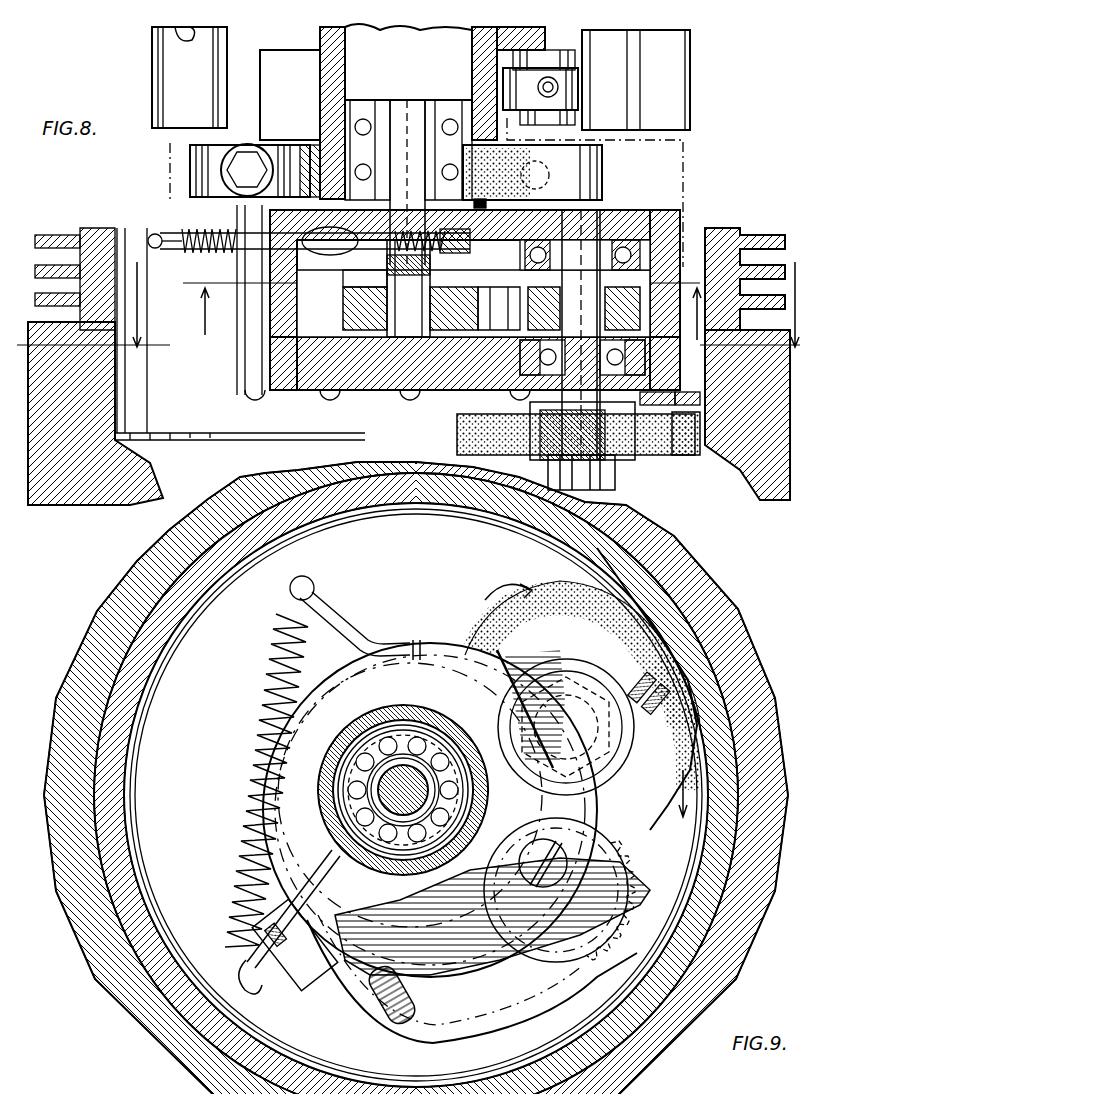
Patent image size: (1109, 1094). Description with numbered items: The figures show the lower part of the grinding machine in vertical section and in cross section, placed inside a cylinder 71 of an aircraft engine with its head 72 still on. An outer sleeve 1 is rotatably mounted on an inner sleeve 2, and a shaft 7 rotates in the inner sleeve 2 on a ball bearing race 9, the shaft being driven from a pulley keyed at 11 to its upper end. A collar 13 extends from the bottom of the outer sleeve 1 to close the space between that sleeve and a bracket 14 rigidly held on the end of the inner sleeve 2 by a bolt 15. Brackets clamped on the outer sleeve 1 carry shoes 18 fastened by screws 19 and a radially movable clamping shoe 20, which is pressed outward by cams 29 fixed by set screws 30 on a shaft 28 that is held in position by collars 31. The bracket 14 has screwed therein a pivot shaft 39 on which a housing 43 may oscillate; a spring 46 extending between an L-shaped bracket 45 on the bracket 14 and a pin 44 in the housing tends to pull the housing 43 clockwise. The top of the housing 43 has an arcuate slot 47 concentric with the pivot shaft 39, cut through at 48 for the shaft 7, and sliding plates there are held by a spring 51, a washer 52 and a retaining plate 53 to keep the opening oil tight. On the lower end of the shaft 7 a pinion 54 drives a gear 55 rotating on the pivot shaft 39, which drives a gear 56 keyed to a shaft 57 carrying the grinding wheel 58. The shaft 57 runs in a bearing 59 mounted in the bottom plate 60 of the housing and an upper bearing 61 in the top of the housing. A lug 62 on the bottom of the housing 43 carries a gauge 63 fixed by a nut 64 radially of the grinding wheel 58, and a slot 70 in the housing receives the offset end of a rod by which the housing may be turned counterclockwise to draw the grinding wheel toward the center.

In FIG. 8, the outer sleeve 1 is at (318, 75).
In FIG. 9, the outer sleeve 1 is at (372, 735).
In FIG. 8, the inner sleeve 2 is at (390, 66).
In FIG. 9, the inner sleeve 2 is at (420, 745).
In FIG. 8, the shaft 7 is at (392, 80).
In FIG. 9, the shaft 7 is at (410, 805).
In FIG. 8, the ball bearing race 9 is at (407, 150).
In FIG. 9, the ball bearing race 9 is at (385, 845).
In FIG. 8, the key 11 is at (408, 314).
In FIG. 8, the collar 13 is at (318, 140).
In FIG. 8, the bracket 14 is at (292, 150).
In FIG. 9, the bracket 14 is at (508, 940).
In FIG. 8, the bolt 15 is at (246, 158).
In FIG. 8, the shoe 18 is at (170, 68).
In FIG. 8, the screw 19 is at (178, 33).
In FIG. 8, the clamping shoe 20 is at (665, 95).
In FIG. 8, the shaft 28 is at (575, 120).
In FIG. 8, the cam 29 is at (578, 94).
In FIG. 8, the set screw 30 is at (558, 84).
In FIG. 8, the collar 31 is at (548, 58).
In FIG. 8, the pivot shaft 39 is at (547, 173).
In FIG. 9, the pivot shaft 39 is at (556, 848).
In FIG. 8, the housing 43 is at (672, 220).
In FIG. 9, the housing 43 is at (355, 1012).
In FIG. 8, the pin 44 is at (150, 234).
In FIG. 9, the pin 44 is at (268, 972).
In FIG. 8, the L-shaped bracket 45 is at (410, 228).
In FIG. 9, the L-shaped bracket 45 is at (355, 622).
In FIG. 8, the spring 46 is at (190, 236).
In FIG. 9, the spring 46 is at (276, 616).
In FIG. 8, the arcuate slot 47 is at (480, 305).
In FIG. 8, the opening 48 is at (473, 205).
In FIG. 8, the spring 51 is at (408, 288).
In FIG. 8, the washer 52 is at (408, 280).
In FIG. 8, the retaining plate 53 is at (350, 279).
In FIG. 8, the pinion 54 is at (343, 312).
In FIG. 9, the pinion 54 is at (345, 718).
In FIG. 9, the gear 55 is at (600, 890).
In FIG. 8, the gear 56 is at (528, 313).
In FIG. 9, the gear 56 is at (603, 742).
In FIG. 8, the shaft 57 is at (581, 335).
In FIG. 9, the shaft 57 is at (556, 770).
In FIG. 8, the grinding wheel 58 is at (455, 432).
In FIG. 9, the grinding wheel 58 is at (558, 603).
In FIG. 8, the bearing 59 is at (545, 342).
In FIG. 8, the bottom plate 60 is at (400, 388).
In FIG. 8, the upper bearing 61 is at (645, 240).
In FIG. 8, the lug 62 is at (656, 406).
In FIG. 9, the lug 62 is at (608, 618).
In FIG. 8, the gauge 63 is at (692, 458).
In FIG. 9, the gauge 63 is at (690, 660).
In FIG. 8, the nut 64 is at (686, 406).
In FIG. 9, the nut 64 is at (650, 712).
In FIG. 9, the slot 70 is at (400, 1010).
In FIG. 8, the cylinder 71 is at (725, 228).
In FIG. 9, the cylinder 71 is at (705, 672).
In FIG. 8, the head 72 is at (748, 497).
In FIG. 9, the head 72 is at (755, 725).